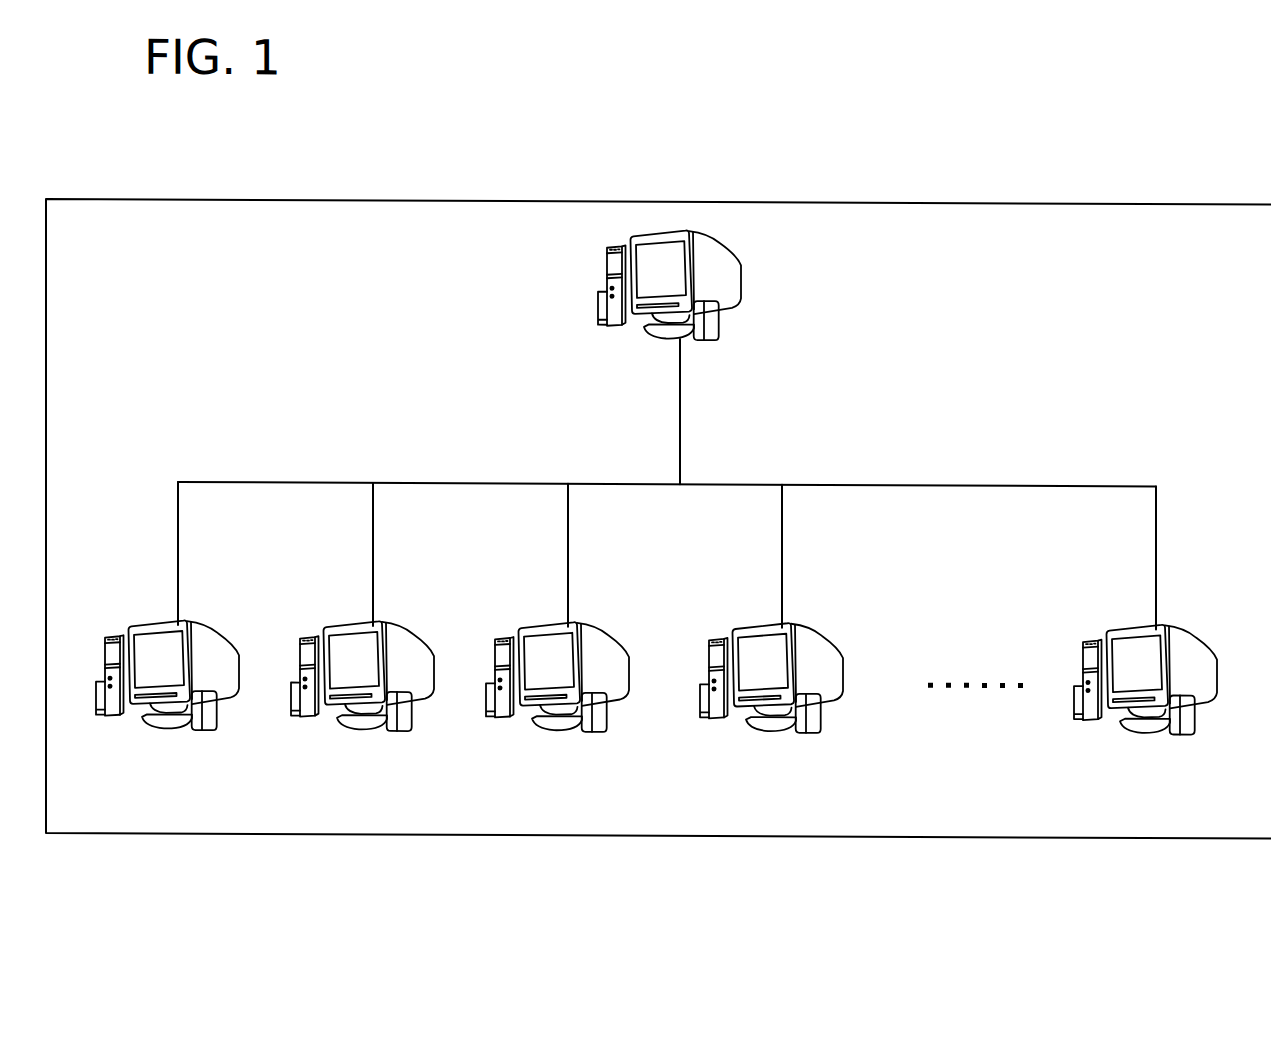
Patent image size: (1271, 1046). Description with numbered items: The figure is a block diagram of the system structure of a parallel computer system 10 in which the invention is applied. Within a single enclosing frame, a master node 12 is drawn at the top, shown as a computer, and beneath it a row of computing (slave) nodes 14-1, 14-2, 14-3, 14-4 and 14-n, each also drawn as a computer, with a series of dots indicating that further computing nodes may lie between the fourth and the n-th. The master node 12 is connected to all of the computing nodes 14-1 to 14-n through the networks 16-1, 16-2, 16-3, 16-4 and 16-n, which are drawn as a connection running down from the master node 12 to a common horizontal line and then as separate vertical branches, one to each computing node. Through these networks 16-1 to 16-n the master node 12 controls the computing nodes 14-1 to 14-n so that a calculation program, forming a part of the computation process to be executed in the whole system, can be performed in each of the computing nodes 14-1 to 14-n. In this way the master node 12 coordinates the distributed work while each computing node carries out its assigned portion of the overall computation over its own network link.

The parallel computer system 10 is at (663, 196).
The master node 12 is at (742, 287).
The computing node 14-1 is at (165, 729).
The computing node 14-2 is at (360, 729).
The computing node 14-3 is at (555, 729).
The computing node 14-4 is at (769, 729).
The computing node 14-n is at (1143, 729).
The network 16-1 is at (178, 540).
The network 16-2 is at (373, 540).
The network 16-3 is at (568, 540).
The network 16-4 is at (782, 540).
The network 16-n is at (1156, 540).